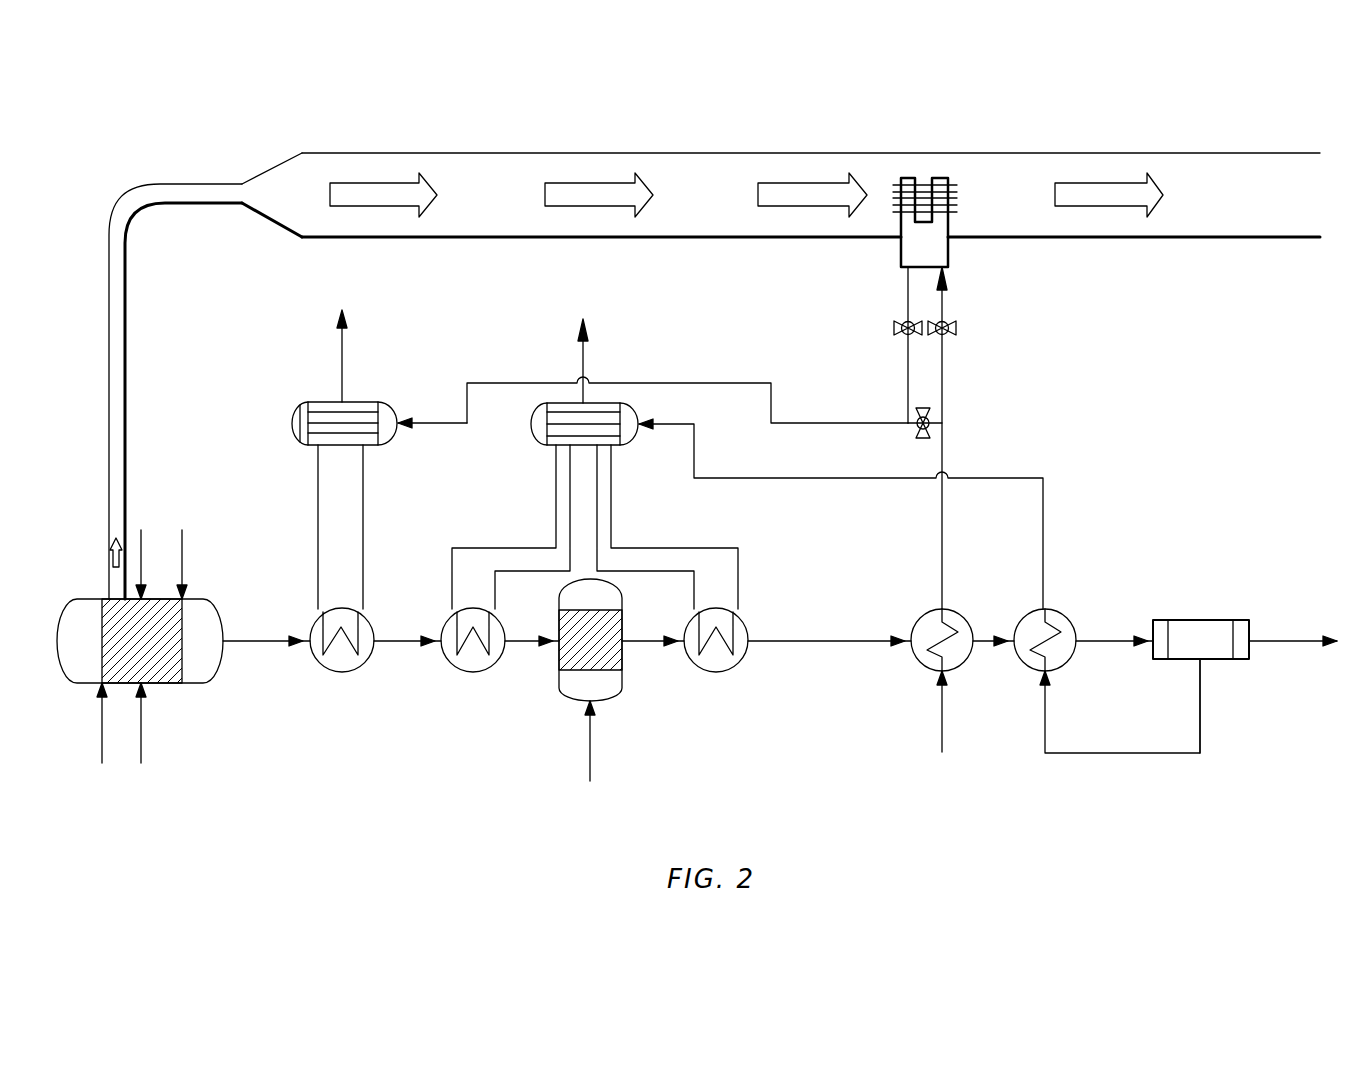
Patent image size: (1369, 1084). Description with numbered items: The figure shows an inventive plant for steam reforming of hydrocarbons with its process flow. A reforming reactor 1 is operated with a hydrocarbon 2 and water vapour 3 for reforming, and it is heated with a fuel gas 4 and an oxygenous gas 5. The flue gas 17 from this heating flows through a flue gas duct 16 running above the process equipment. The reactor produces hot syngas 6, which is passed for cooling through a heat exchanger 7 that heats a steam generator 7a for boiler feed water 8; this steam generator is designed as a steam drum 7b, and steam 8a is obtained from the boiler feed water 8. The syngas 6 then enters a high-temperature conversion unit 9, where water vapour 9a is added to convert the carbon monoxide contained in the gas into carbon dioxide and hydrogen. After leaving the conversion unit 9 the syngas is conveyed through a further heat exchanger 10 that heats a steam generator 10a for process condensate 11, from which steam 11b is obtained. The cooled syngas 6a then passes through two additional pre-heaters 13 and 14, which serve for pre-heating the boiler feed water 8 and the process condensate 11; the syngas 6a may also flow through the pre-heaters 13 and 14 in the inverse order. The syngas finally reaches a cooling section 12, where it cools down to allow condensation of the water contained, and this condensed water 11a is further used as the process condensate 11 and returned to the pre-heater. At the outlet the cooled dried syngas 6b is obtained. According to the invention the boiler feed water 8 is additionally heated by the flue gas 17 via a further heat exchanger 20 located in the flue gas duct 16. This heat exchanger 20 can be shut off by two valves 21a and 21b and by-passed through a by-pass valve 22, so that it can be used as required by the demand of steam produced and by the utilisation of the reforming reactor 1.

The reforming reactor 1 is at (203, 685).
The hydrocarbon 2 is at (102, 763).
The water vapour 3 is at (141, 763).
The fuel gas 4 is at (141, 530).
The oxygenous gas 5 is at (182, 530).
The syngas 6 is at (250, 641).
The cooled syngas 6a is at (818, 641).
The cooled dried syngas 6b is at (1282, 641).
The heat exchanger 7 is at (365, 613).
The steam generator 7a is at (365, 401).
The steam drum 7b is at (312, 442).
The boiler feed water 8 is at (442, 423).
The steam 8a is at (342, 360).
The high-temperature conversion unit 9 is at (622, 680).
The water vapour 9a is at (590, 748).
The heat exchanger 10 is at (740, 613).
The steam generator 10a is at (543, 447).
The process condensate 11 is at (832, 478).
The condensed water 11a is at (1200, 700).
The steam 11b is at (583, 362).
The cooling section 12 is at (1200, 620).
The pre-heater 13 is at (968, 615).
The pre-heater 14 is at (1070, 615).
The flue gas duct 16 is at (812, 152).
The flue gas 17 is at (555, 207).
The heat exchanger 20 is at (950, 223).
The valve 21a is at (956, 328).
The valve 21b is at (894, 328).
The by-pass valve 22 is at (942, 423).